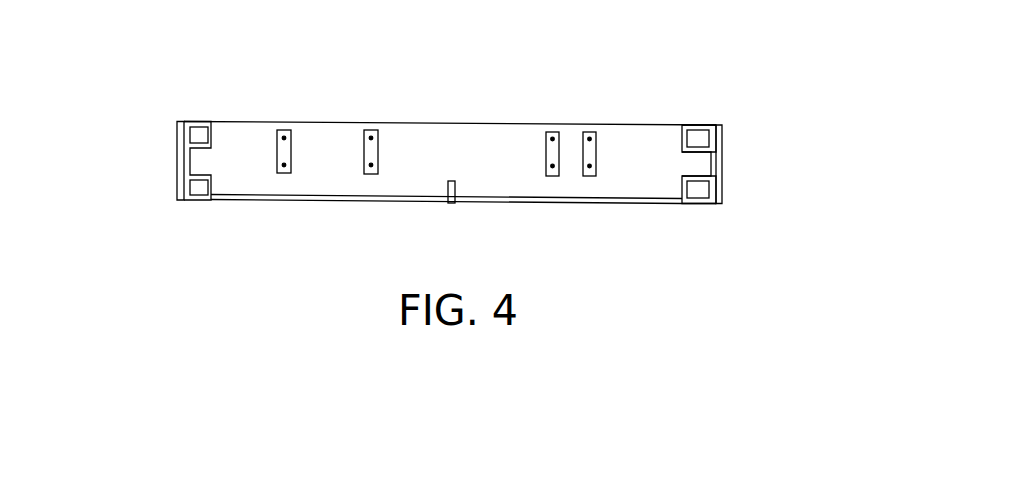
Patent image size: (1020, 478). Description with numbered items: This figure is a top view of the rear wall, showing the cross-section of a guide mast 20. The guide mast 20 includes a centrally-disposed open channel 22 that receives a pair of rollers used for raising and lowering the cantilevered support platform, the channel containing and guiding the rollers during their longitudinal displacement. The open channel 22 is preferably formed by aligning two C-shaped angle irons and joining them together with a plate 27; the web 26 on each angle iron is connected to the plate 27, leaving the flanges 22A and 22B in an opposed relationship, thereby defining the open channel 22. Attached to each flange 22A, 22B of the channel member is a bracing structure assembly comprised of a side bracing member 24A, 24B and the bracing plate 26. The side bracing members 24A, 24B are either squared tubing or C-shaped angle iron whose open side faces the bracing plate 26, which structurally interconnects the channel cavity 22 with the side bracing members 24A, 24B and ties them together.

The guide mast 20 is at (160, 121).
The open channel 22 is at (216, 164).
The flange 22A is at (208, 147).
The flange 22B is at (210, 176).
The side bracing member 24A is at (707, 128).
The side bracing member 24B is at (698, 206).
The bracing plate 26 is at (715, 178).
The plate 27 is at (181, 168).